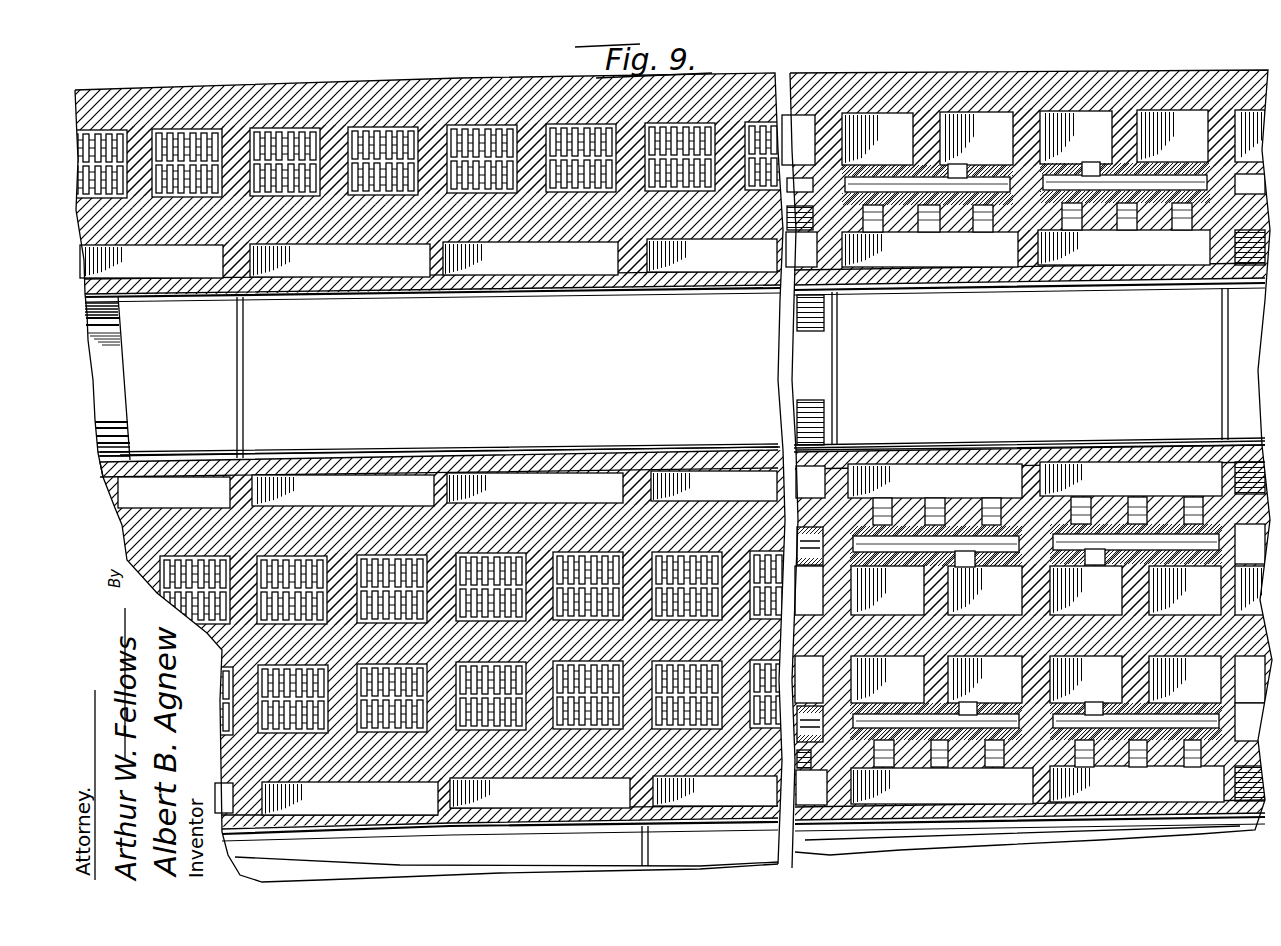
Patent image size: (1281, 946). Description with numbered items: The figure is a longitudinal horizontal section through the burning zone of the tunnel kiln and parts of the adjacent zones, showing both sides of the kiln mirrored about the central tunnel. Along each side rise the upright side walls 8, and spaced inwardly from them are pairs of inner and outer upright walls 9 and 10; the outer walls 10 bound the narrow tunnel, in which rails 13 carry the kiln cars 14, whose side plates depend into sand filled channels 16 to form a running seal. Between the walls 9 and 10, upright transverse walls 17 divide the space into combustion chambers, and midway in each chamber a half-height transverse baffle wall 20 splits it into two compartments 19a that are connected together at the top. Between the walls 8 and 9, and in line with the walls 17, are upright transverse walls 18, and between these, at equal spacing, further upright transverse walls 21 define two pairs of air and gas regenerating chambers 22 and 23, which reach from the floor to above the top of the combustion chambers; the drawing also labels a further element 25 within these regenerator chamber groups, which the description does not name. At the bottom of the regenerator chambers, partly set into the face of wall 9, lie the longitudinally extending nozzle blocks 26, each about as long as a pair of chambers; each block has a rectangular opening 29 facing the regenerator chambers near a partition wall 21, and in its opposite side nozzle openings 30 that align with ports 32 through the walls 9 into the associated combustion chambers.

The upright side wall 8 is at (90, 112).
The inner upright wall 9 is at (105, 226).
The outer upright wall 10 is at (85, 287).
The rail 13 is at (100, 327).
The kiln car 14 is at (632, 384).
The sand filled channel 16 is at (86, 307).
The upright transverse wall 17 is at (224, 263).
The upright transverse wall 18 is at (238, 128).
The compartment 19a is at (332, 281).
The transverse baffle wall 20 is at (447, 286).
The upright transverse wall 21 is at (332, 127).
The air regenerating chamber 22 is at (165, 130).
The gas regenerating chamber 23 is at (425, 127).
The flue block element 25 is at (197, 150).
The top nozzle block 26 is at (1175, 704).
The rectangular opening 29 is at (957, 170).
The nozzle opening 30 is at (981, 232).
The port 32 is at (876, 233).